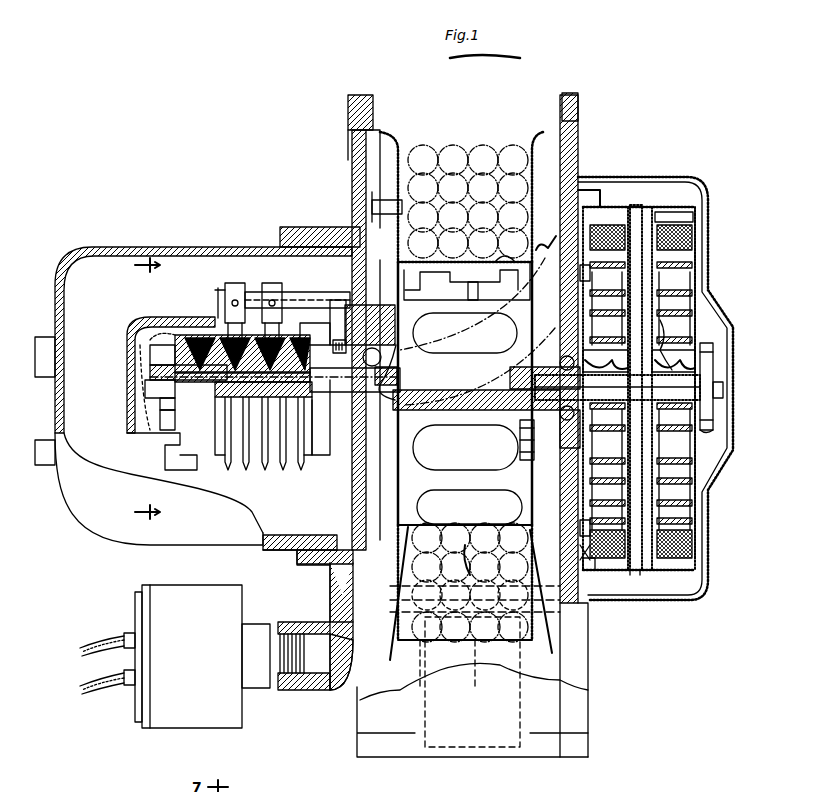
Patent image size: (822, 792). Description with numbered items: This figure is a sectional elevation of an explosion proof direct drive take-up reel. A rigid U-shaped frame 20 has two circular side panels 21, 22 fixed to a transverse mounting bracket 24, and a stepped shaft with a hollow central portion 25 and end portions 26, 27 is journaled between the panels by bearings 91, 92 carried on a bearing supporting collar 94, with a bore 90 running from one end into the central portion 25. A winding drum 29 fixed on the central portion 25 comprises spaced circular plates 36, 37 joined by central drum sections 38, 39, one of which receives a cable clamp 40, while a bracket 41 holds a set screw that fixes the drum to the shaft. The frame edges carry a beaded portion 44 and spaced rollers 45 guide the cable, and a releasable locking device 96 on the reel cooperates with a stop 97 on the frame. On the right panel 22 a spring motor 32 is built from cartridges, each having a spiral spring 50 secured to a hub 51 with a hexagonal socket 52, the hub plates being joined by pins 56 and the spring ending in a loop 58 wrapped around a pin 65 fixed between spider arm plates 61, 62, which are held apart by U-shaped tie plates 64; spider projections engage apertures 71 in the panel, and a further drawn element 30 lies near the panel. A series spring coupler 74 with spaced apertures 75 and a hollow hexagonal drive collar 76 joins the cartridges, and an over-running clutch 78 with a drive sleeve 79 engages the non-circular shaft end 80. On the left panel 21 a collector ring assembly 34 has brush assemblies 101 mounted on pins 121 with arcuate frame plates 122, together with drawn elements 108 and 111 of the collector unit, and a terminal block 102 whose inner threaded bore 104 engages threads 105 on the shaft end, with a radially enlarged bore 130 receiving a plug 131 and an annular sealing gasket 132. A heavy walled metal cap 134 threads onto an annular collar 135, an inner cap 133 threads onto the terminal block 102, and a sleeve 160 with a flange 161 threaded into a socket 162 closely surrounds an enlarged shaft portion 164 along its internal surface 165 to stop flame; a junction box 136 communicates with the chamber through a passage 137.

The U-shaped frame 20 is at (580, 112).
The side panel 21 is at (352, 150).
The side panel 22 is at (580, 182).
The transverse mounting bracket 24 is at (510, 760).
The central portion of shaft 25 is at (478, 420).
The small diameter end portion of shaft 26 is at (710, 360).
The large diameter end portion of shaft 27 is at (220, 400).
The winding drum 29 is at (528, 140).
The bracket 30 is at (548, 248).
The spring motor 32 is at (685, 172).
The collector ring assembly 34 is at (176, 294).
The circular plate 36 is at (392, 146).
The circular plate 37 is at (532, 135).
The central drum section 38 is at (410, 290).
The central drum section 39 is at (455, 530).
The cable clamp 40 is at (478, 288).
The bracket 41 is at (520, 444).
The beaded portion 44 is at (350, 97).
The spaced rollers 45 is at (475, 560).
The spiral spring 50 is at (600, 232).
The hub 51 is at (628, 350).
The hexagonal socket 52 is at (628, 366).
The pins 56 is at (676, 420).
The loop 58 is at (692, 200).
The spider arm plate 61 is at (598, 565).
The spider arm plate 62 is at (635, 572).
The U-shaped tie plates 64 is at (604, 210).
The pin 65 is at (692, 216).
The apertures 71 is at (580, 272).
The series spring coupler 74 is at (636, 205).
The spaced apertures 75 is at (640, 272).
The hexagonal drive collar 76 is at (620, 397).
The over-running clutch 78 is at (713, 405).
The drive sleeve 79 is at (670, 345).
The non-circular shaft end 80 is at (723, 388).
The bore 90 is at (470, 398).
The bearing 91 is at (560, 358).
The bearing 92 is at (398, 350).
The bearing supporting collar 94 is at (383, 358).
The releasable locking device 96 is at (380, 200).
The stop 97 is at (362, 228).
The brush assemblies 101 is at (277, 276).
The terminal block 102 is at (185, 315).
The inner threaded bore 104 is at (195, 392).
The threads 105 is at (205, 400).
The gear 108 is at (262, 368).
The spline 111 is at (345, 343).
The pins 121 is at (298, 292).
The arcuate frame plates 122 is at (228, 283).
The radially enlarged bore 130 is at (150, 368).
The plug 131 is at (153, 372).
The annular sealing gasket 132 is at (150, 385).
The inner cap 133 is at (130, 435).
The metal cap 134 is at (128, 250).
The annular collar 135 is at (330, 227).
The junction box 136 is at (232, 722).
The passage 137 is at (340, 690).
The sleeve 160 is at (320, 373).
The flange 161 is at (346, 315).
The threaded socket 162 is at (335, 335).
The enlarged shaft portion 164 is at (328, 440).
The internal surface of sleeve 165 is at (372, 373).